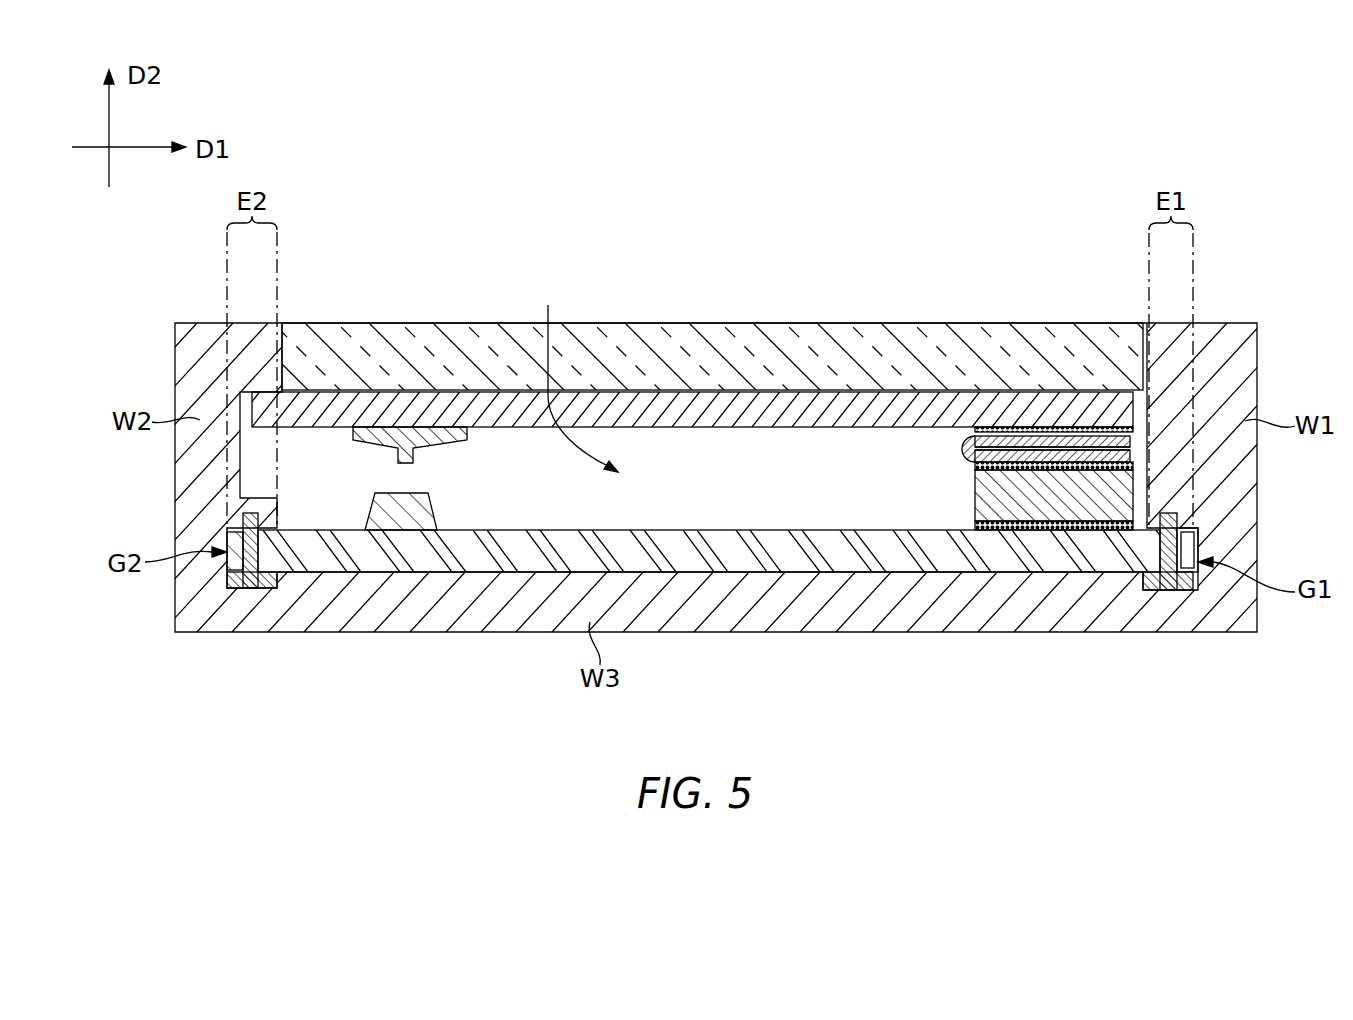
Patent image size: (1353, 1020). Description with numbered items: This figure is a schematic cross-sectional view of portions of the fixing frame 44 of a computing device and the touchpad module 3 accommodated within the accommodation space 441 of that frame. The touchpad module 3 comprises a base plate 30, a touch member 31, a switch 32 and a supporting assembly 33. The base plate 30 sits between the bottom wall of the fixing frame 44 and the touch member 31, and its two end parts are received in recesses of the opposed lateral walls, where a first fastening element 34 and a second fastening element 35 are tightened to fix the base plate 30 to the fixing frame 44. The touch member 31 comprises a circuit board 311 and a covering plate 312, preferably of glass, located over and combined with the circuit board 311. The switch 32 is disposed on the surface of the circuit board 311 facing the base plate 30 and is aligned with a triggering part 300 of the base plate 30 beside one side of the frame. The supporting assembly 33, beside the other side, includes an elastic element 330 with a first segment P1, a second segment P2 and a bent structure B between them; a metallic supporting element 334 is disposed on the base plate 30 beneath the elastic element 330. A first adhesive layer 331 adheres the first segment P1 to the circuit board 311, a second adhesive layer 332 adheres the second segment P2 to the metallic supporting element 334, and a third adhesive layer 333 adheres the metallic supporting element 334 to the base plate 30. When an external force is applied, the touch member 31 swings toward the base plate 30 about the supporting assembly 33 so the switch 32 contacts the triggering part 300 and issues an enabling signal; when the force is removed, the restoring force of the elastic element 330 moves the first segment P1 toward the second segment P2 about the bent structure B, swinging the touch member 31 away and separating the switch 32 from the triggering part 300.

The touchpad module 3 is at (1288, 86).
The fixing frame 44 is at (1230, 335).
The accommodation space 441 is at (572, 373).
The touch member 31 is at (690, 278).
The circuit board 311 is at (705, 395).
The covering plate 312 is at (806, 348).
The switch 32 is at (400, 432).
The base plate 30 is at (745, 575).
The triggering part 300 is at (412, 505).
The supporting assembly 33 is at (1280, 647).
The elastic element 330 is at (873, 686).
The first adhesive layer 331 is at (1003, 428).
The second adhesive layer 332 is at (1133, 460).
The third adhesive layer 333 is at (1133, 528).
The metallic supporting element 334 is at (1133, 495).
The first fastening element 34 is at (1170, 592).
The second fastening element 35 is at (248, 590).
The bent structure B is at (967, 452).
The first segment P1 is at (1063, 445).
The second segment P2 is at (1002, 468).